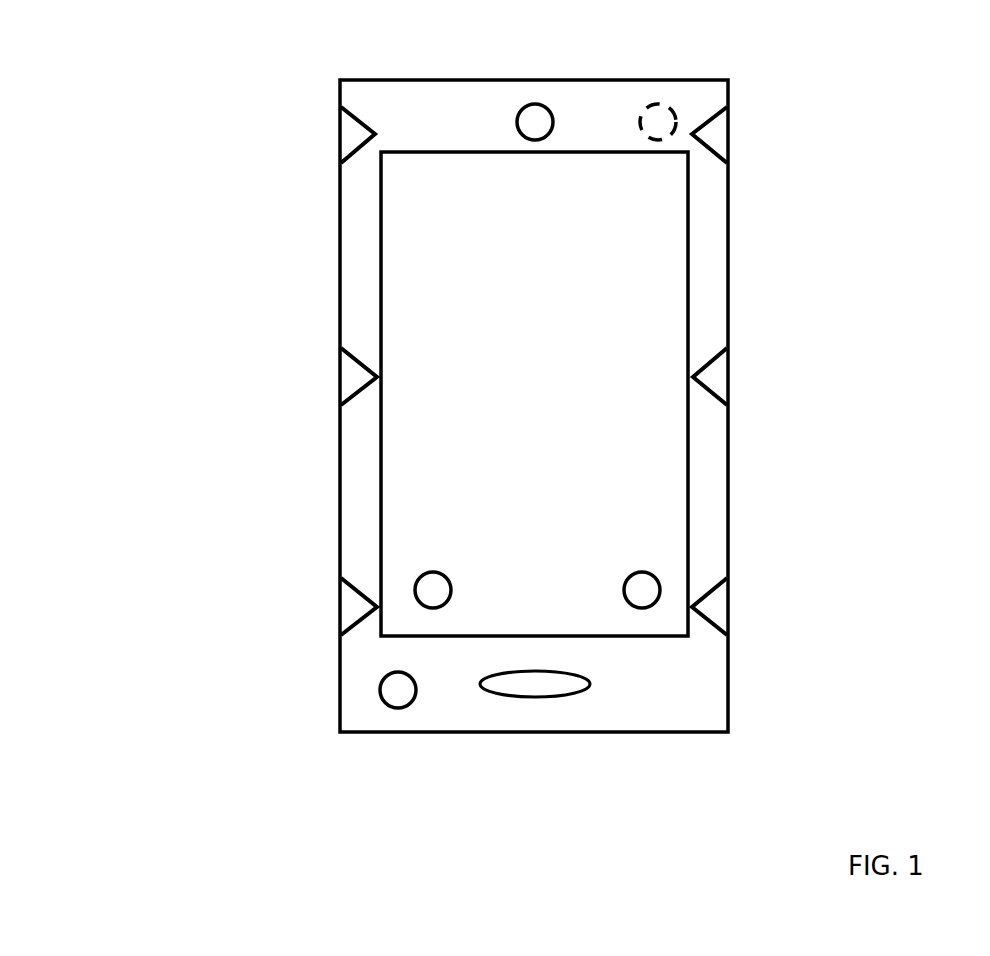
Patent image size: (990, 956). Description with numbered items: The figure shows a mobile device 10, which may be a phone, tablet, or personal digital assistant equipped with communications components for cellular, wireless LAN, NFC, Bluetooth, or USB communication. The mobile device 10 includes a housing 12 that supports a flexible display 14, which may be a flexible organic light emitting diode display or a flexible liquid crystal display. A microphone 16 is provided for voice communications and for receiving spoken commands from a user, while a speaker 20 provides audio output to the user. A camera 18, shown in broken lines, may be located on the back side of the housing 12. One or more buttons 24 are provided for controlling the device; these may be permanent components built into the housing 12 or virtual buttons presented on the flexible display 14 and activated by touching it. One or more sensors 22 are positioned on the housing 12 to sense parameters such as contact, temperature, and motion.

The mobile device 10 is at (210, 102).
The housing 12 is at (339, 260).
The flexible display 14 is at (562, 337).
The microphone 16 is at (520, 695).
The camera 18 is at (678, 115).
The speaker 20 is at (534, 103).
The sensors 22 is at (339, 152).
The buttons 24 is at (415, 583).